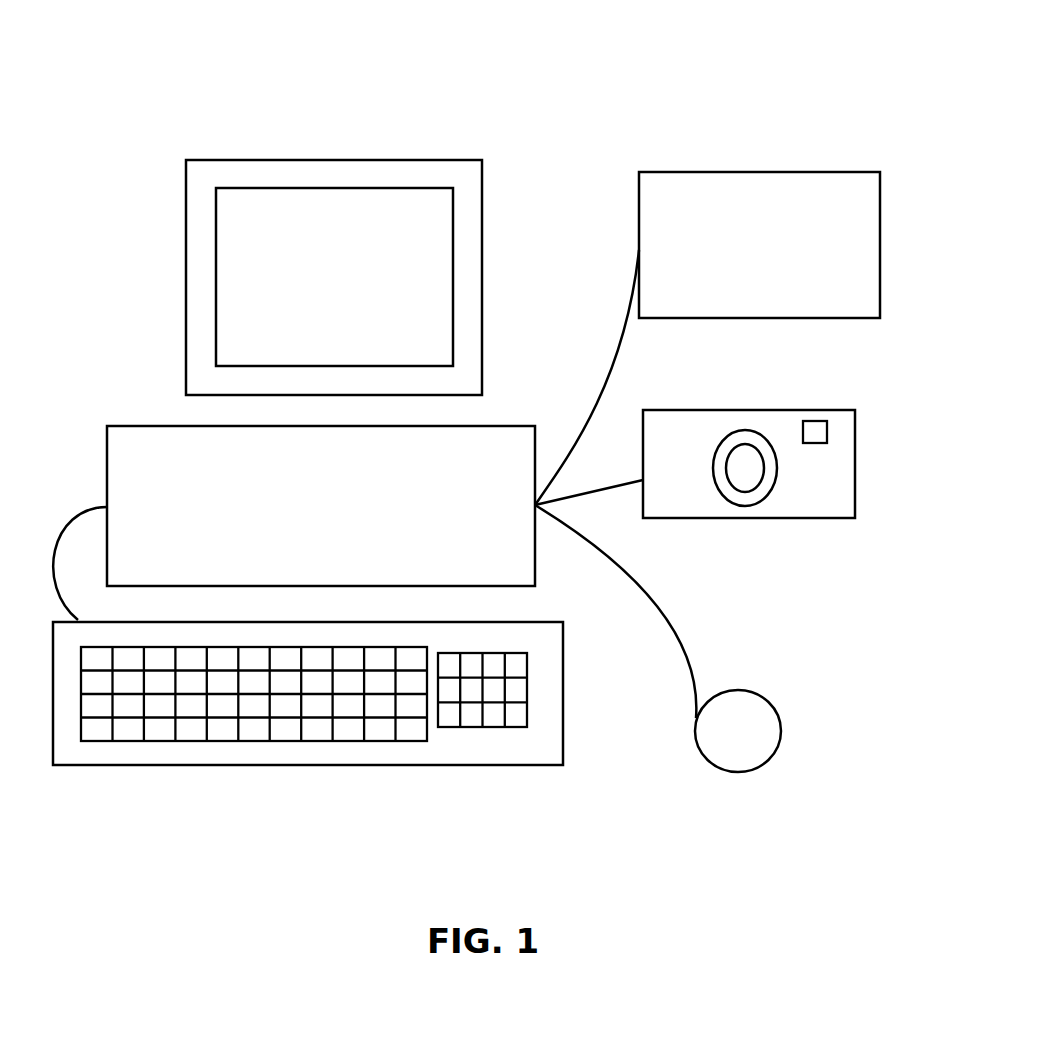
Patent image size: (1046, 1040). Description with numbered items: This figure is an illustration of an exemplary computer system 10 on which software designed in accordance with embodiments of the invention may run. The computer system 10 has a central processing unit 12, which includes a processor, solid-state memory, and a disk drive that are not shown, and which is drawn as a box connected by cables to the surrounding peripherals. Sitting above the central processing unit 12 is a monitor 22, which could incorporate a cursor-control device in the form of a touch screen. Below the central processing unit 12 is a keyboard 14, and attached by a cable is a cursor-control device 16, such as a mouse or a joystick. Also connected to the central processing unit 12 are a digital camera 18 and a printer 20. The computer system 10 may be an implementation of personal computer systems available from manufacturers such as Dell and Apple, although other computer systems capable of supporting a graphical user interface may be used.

The computer system 10 is at (512, 75).
The central processing unit 12 is at (153, 425).
The keyboard 14 is at (428, 765).
The cursor-control device 16 is at (782, 727).
The digital camera 18 is at (857, 460).
The printer 20 is at (883, 243).
The monitor 22 is at (317, 160).